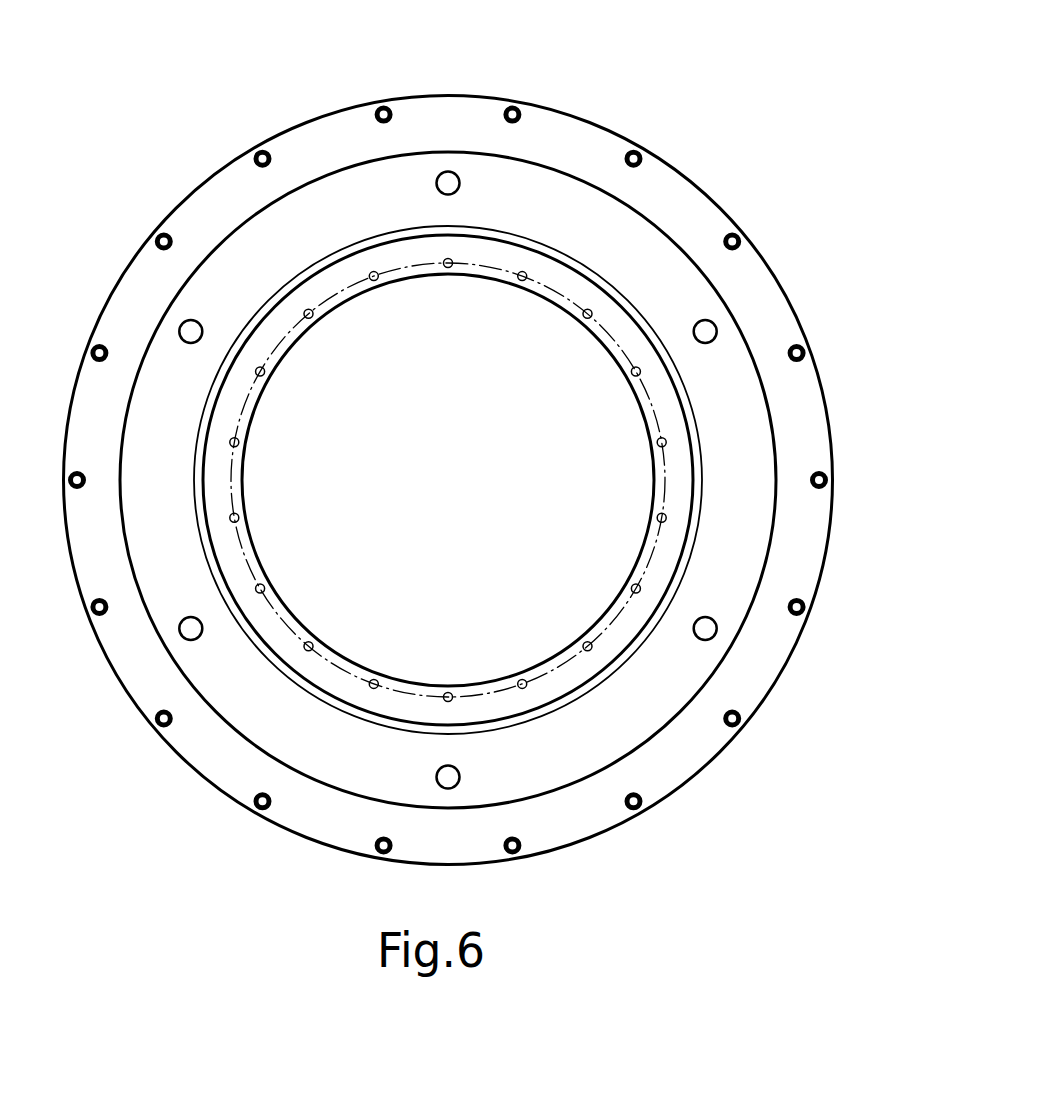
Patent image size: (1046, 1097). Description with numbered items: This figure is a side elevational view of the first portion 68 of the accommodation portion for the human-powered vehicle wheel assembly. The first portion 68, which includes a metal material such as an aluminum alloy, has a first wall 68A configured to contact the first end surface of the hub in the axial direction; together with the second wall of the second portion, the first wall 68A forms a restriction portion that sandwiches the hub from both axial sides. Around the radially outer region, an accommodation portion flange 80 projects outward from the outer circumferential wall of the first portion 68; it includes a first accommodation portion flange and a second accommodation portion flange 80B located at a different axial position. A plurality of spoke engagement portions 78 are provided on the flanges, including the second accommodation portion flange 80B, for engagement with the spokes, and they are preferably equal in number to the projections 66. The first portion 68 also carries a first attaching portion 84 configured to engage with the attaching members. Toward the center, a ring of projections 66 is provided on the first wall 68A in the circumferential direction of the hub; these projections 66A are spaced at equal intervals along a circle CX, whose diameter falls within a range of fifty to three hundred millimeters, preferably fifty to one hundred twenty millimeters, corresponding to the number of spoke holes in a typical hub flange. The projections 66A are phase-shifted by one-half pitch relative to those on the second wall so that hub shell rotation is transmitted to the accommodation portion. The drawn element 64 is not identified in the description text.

The first portion 68 is at (714, 63).
The first wall 68A is at (568, 677).
The second accommodation portion flange 80B is at (325, 132).
The accommodation portion flange 80 is at (448, 461).
The spoke engagement portions 78 is at (722, 237).
The first attaching portion 84 is at (448, 183).
The rotor core 64 is at (351, 468).
The projections 66 is at (448, 480).
The projections 66A is at (306, 313).
The circle CX is at (410, 266).